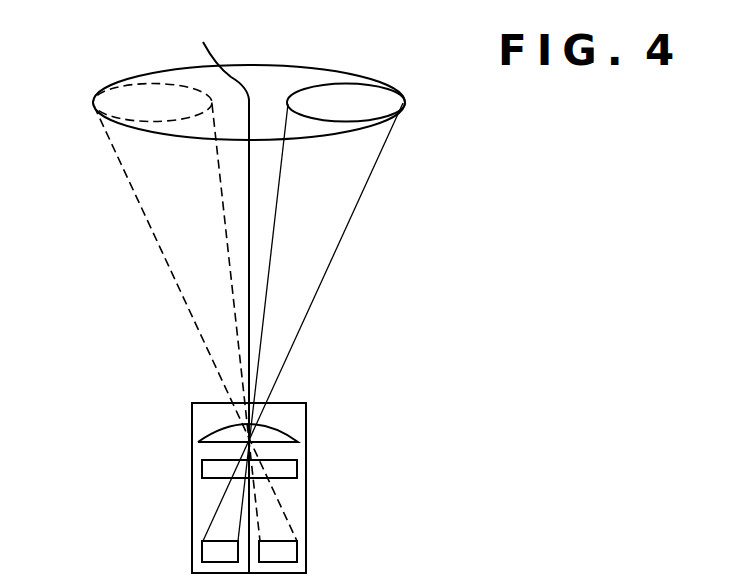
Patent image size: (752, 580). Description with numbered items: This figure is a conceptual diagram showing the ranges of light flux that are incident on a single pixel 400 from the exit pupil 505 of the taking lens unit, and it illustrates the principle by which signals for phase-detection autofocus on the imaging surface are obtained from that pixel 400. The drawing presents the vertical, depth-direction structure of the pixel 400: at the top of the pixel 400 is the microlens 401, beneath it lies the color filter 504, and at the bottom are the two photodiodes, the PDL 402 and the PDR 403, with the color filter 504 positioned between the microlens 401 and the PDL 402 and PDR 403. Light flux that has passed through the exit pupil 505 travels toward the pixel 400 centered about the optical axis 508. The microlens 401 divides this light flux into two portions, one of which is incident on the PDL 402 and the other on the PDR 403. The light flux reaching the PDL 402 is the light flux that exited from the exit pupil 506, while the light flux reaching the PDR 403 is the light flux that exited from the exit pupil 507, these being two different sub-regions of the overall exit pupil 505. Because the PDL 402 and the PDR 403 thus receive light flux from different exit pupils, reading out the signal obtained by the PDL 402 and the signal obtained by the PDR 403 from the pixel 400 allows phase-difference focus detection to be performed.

The pixel 400 is at (192, 410).
The microlens 401 is at (288, 432).
The PDL 402 is at (202, 550).
The PDR 403 is at (297, 550).
The color filter 504 is at (202, 468).
The exit pupil 505 is at (299, 68).
The exit pupil 506 is at (405, 101).
The exit pupil 507 is at (93, 105).
The optical axis 508 is at (217, 297).